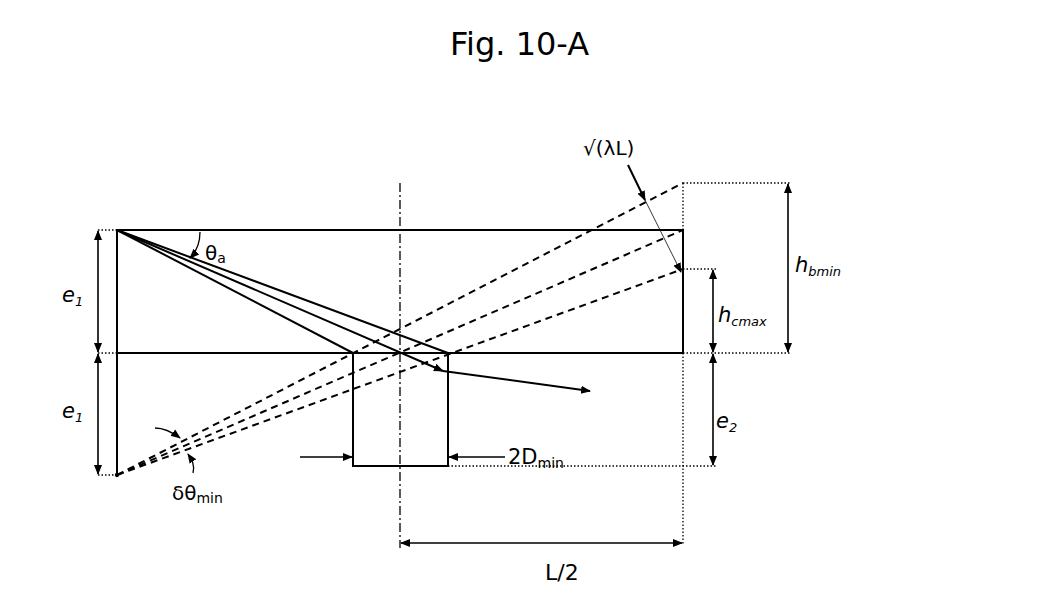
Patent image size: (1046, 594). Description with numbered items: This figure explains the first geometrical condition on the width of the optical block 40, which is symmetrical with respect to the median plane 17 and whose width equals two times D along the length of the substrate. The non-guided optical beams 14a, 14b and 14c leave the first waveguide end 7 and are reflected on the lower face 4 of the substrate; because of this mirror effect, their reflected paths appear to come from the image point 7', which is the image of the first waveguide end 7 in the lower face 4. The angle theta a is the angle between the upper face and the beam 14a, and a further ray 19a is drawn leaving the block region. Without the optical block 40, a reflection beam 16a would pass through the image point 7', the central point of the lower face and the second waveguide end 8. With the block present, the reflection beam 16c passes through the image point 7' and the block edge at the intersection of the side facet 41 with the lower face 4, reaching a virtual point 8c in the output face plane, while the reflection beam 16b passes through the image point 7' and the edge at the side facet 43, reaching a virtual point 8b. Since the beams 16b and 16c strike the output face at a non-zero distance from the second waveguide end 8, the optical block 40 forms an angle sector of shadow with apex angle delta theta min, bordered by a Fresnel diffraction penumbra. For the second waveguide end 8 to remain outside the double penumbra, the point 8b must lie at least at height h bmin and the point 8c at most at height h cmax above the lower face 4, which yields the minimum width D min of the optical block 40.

The lower face 4 is at (672, 355).
The first waveguide end 7 is at (93, 324).
The image point 7' is at (95, 506).
The second waveguide end 8 is at (684, 230).
The virtual point 8b is at (684, 183).
The virtual point 8c is at (698, 267).
The non-guided optical beam 14a is at (252, 285).
The non-guided optical beam 14b is at (227, 290).
The non-guided optical beam 14c is at (327, 307).
The reflection beam 16a is at (570, 278).
The reflection beam 16b is at (505, 277).
The reflection beam 16c is at (580, 307).
The median plane 17 is at (402, 487).
The reflected ray 19a is at (533, 385).
The optical block 40 is at (377, 458).
The side facet 41 is at (450, 404).
The side facet 43 is at (337, 420).